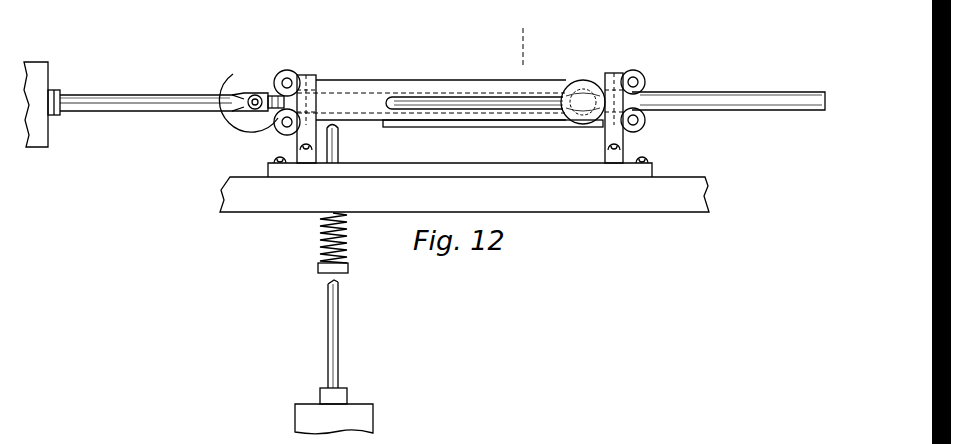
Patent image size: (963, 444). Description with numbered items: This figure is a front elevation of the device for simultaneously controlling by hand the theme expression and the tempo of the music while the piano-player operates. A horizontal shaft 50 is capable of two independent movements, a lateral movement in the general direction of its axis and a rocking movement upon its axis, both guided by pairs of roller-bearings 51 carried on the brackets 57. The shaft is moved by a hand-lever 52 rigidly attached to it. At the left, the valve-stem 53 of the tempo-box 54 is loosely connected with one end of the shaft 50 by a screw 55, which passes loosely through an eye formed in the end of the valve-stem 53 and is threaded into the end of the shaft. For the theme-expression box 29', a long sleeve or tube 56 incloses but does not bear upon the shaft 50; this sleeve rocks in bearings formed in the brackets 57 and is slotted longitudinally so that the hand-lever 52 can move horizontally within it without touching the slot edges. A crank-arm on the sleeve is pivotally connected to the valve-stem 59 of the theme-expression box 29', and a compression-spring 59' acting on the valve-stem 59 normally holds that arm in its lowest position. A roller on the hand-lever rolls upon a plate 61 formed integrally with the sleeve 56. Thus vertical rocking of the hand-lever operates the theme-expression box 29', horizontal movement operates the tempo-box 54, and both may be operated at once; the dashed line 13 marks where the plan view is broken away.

The tempo-box 54 is at (40, 68).
The valve-stem 53 is at (115, 102).
The screw 55 is at (248, 108).
The roller-bearings 51 is at (276, 77).
The brackets 57 is at (304, 73).
The sleeve or tube 56 is at (460, 92).
The section line 13 13 is at (626, 68).
The hand-lever 52 is at (590, 78).
The horizontal shaft 50 is at (750, 100).
The plate 61 is at (500, 126).
The compression-spring 59' is at (301, 243).
The valve-stem 59 is at (312, 342).
The theme-expression box 29' is at (360, 419).